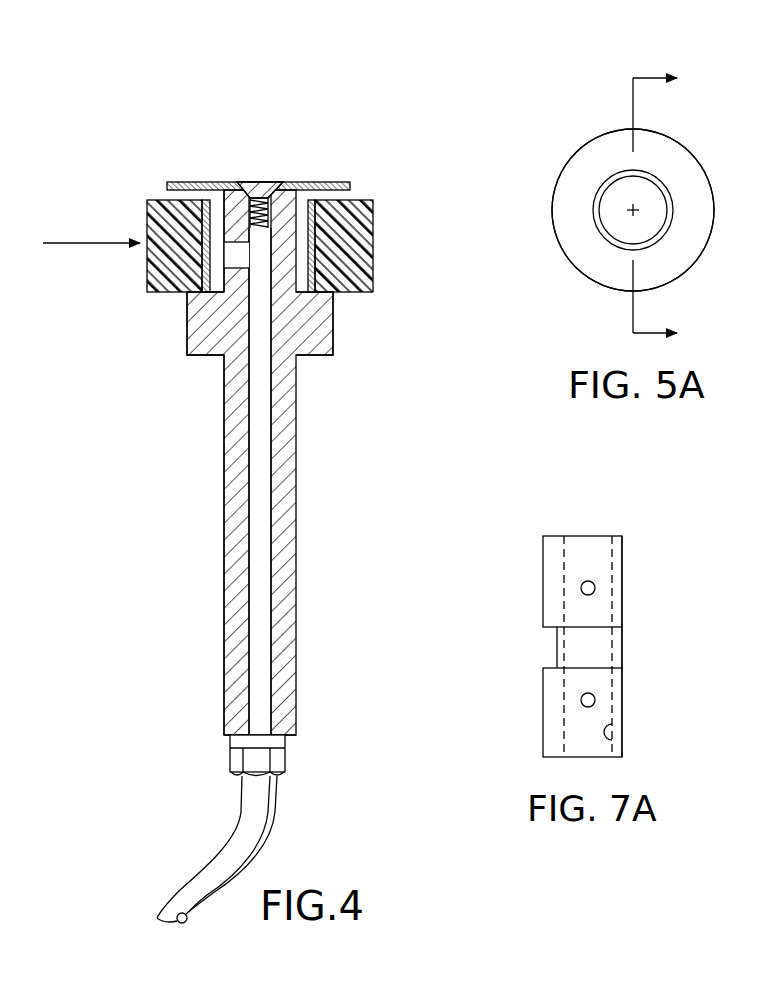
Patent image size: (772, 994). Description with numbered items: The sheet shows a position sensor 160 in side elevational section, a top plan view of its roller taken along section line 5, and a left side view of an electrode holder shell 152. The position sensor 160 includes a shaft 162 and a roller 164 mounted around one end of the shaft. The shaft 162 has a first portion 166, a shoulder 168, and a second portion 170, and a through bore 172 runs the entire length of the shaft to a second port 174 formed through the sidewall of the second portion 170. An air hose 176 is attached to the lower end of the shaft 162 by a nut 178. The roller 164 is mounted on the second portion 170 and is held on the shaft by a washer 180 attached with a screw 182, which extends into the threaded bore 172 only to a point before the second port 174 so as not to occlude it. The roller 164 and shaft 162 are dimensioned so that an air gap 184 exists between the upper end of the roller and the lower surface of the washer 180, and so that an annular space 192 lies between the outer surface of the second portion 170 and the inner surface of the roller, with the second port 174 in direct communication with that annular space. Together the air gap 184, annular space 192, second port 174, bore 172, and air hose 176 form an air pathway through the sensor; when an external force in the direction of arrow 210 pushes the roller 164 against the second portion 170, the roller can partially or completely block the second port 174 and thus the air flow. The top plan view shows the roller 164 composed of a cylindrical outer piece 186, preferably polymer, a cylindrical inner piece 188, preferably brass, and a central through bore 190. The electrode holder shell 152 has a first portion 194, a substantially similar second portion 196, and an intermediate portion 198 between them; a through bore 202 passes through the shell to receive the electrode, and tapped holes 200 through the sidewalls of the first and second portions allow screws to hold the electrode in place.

In FIG. 7A, the electrode holder shell 152 is at (638, 650).
In FIG. 4, the position sensor 160 is at (192, 400).
In FIG. 4, the shaft 162 is at (225, 617).
In FIG. 4, the roller 164 is at (147, 203).
In FIG. 5A, the roller 164 is at (562, 142).
In FIG. 4, the first portion 166 is at (225, 512).
In FIG. 4, the shoulder 168 is at (325, 327).
In FIG. 4, the second portion 170 is at (282, 223).
In FIG. 4, the through bore 172 is at (258, 440).
In FIG. 4, the second port 174 is at (235, 258).
In FIG. 4, the air hose 176 is at (205, 864).
In FIG. 4, the nut 178 is at (232, 762).
In FIG. 4, the washer 180 is at (215, 182).
In FIG. 4, the screw 182 is at (258, 181).
In FIG. 4, the air gap 184 is at (358, 192).
In FIG. 5A, the cylindrical outer piece 186 is at (672, 157).
In FIG. 5A, the cylindrical inner piece 188 is at (600, 233).
In FIG. 5A, the through bore 190 is at (647, 223).
In FIG. 4, the annular space 192 is at (300, 273).
In FIG. 7A, the first portion 194 is at (550, 595).
In FIG. 7A, the second portion 196 is at (550, 717).
In FIG. 7A, the intermediate portion 198 is at (575, 652).
In FIG. 7A, the holes 200 is at (592, 588).
In FIG. 7A, the through bore 202 is at (610, 738).
In FIG. 4, the arrow 210 is at (72, 247).
In FIG. 5A, the section line 5 is at (645, 208).